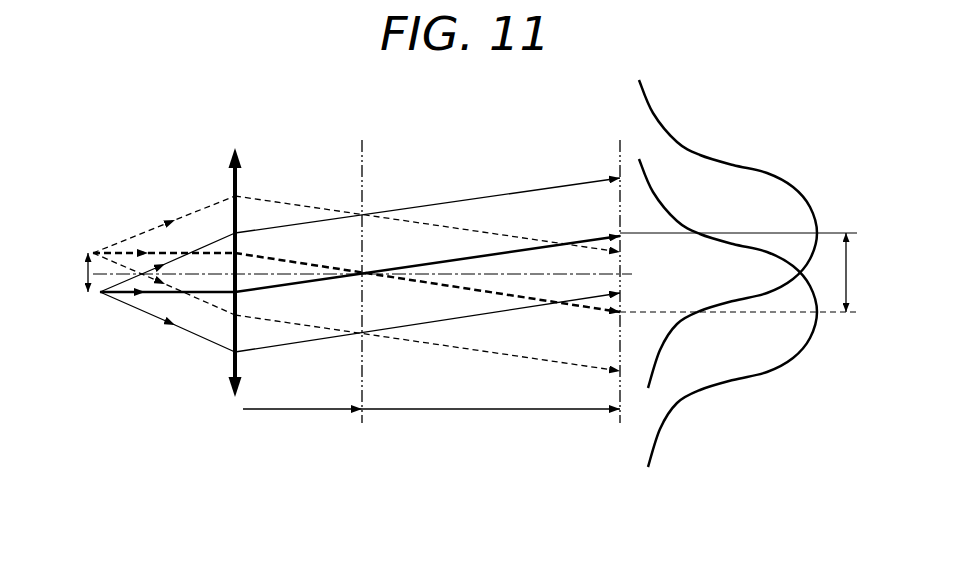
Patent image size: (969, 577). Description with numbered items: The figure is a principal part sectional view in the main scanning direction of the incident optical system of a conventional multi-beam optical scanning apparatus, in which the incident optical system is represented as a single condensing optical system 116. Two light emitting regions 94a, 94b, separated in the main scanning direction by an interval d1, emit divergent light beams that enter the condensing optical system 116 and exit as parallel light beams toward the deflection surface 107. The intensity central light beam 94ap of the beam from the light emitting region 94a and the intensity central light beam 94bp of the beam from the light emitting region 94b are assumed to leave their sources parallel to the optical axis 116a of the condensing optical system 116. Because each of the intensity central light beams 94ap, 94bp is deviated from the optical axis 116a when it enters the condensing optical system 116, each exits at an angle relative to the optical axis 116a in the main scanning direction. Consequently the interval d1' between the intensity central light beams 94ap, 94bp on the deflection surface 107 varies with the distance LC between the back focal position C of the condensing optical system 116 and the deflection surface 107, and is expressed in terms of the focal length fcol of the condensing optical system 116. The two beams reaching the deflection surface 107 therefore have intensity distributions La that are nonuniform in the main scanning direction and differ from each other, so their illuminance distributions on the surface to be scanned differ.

The light emitting region 94a is at (336, 283).
The light emitting region 94b is at (336, 265).
The condensing optical system 116 is at (230, 296).
The optical axis 116a is at (272, 275).
The deflection surface 107 is at (623, 296).
The intensity central light beam 94ap is at (480, 292).
The intensity central light beam 94bp is at (447, 258).
The intensity distribution La is at (740, 163).
The back focal position C is at (362, 298).
The interval d1 is at (70, 272).
The interval d1' is at (864, 272).
The focal length fcol is at (302, 396).
The distance LC is at (491, 427).